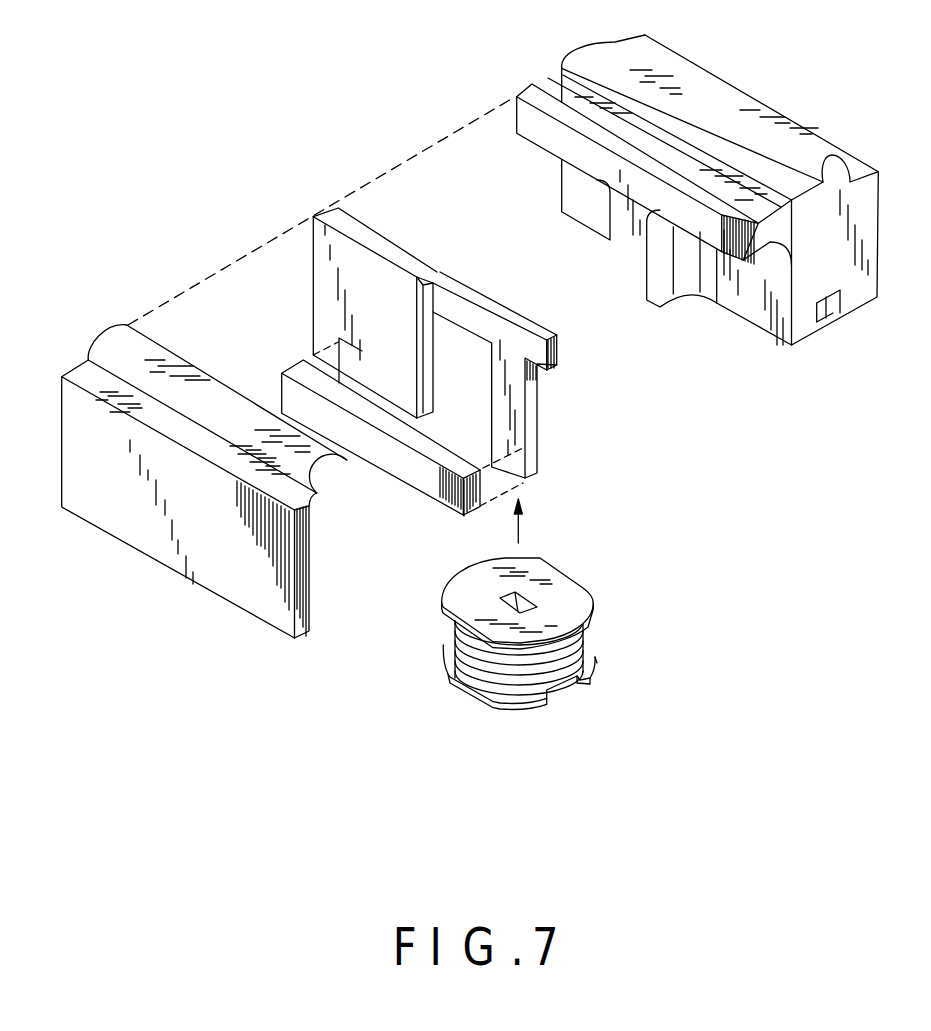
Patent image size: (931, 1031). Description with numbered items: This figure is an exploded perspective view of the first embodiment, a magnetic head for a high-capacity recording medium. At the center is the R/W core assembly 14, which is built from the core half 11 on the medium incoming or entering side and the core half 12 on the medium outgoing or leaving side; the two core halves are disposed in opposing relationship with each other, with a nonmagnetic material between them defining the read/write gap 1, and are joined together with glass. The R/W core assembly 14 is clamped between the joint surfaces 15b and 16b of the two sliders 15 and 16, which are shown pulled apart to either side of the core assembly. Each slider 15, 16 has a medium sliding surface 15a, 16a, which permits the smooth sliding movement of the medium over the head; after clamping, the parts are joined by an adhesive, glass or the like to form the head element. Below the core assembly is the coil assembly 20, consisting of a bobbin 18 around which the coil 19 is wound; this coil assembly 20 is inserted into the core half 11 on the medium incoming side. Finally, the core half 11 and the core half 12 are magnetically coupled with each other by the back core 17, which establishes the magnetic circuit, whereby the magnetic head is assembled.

The gap 1 is at (432, 280).
The core half 11 is at (560, 352).
The core half 12 is at (325, 293).
The R/W core assembly 14 is at (478, 303).
The slider 15 is at (760, 310).
The medium sliding surface 15a is at (700, 100).
The joint surface 15b is at (537, 136).
The slider 16 is at (188, 560).
The medium sliding surface 16a is at (127, 340).
The joint surface 16b is at (352, 483).
The back core 17 is at (403, 467).
The bobbin 18 is at (573, 600).
The coil 19 is at (582, 647).
The coil assembly 20 is at (472, 690).